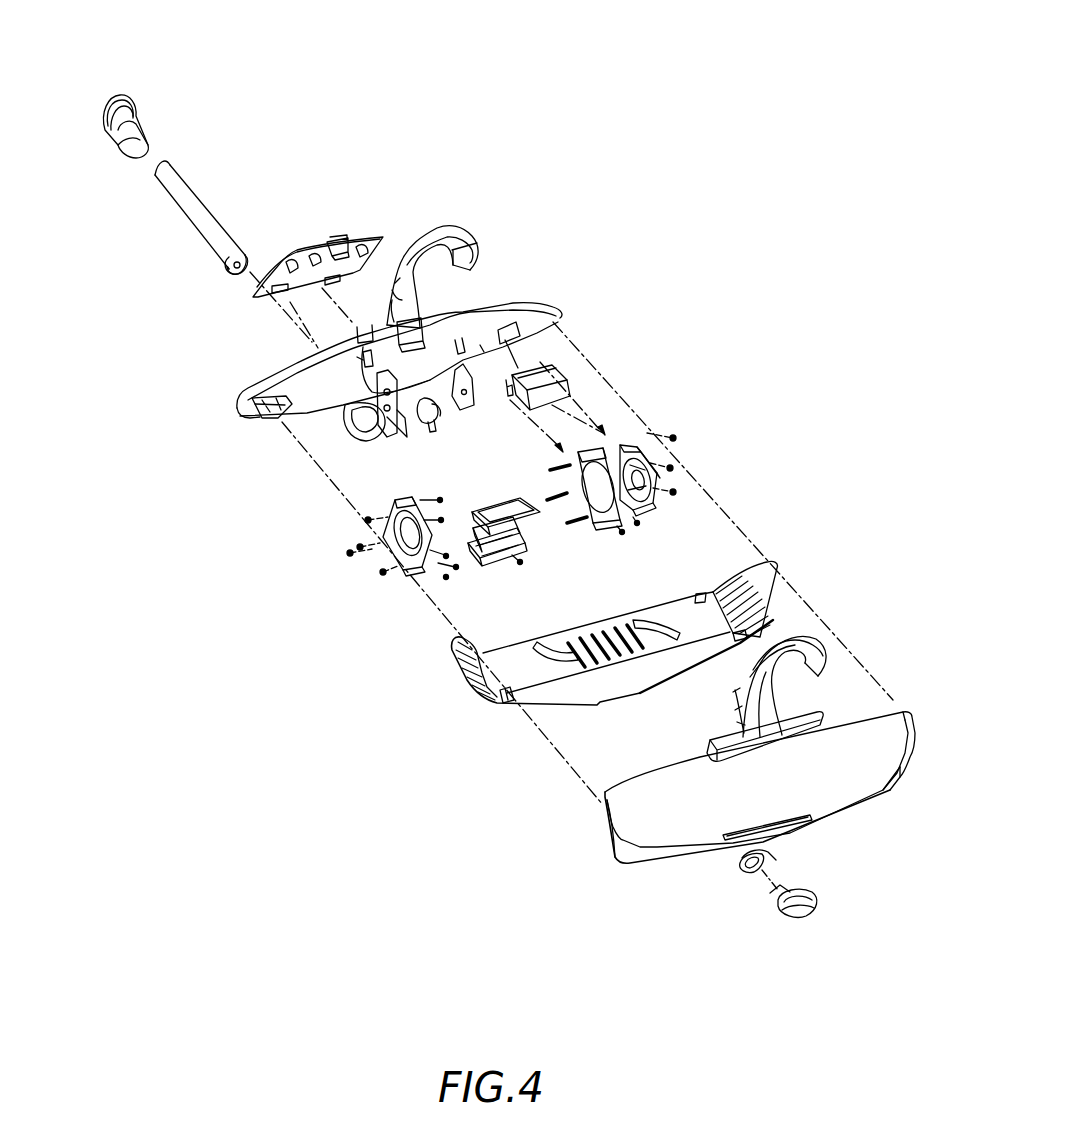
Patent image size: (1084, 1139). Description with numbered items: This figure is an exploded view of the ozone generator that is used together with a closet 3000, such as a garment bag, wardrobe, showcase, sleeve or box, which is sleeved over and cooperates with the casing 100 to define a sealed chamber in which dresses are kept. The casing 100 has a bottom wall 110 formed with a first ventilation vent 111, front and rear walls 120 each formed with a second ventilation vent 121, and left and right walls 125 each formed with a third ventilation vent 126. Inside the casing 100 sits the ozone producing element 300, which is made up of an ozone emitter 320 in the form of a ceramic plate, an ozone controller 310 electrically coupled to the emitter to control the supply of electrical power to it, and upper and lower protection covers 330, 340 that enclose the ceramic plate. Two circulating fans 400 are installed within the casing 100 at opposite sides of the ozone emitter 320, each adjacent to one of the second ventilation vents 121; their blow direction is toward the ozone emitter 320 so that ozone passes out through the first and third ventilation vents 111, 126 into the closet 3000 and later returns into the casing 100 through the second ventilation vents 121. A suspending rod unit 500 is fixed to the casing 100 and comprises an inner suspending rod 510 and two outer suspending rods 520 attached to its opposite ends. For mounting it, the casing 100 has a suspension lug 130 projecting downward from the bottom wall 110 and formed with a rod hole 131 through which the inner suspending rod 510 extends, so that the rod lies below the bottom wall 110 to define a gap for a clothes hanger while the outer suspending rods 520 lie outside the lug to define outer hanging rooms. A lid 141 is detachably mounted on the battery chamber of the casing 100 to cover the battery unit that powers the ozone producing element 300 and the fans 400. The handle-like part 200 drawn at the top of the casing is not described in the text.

The casing 100 is at (725, 800).
The bottom wall 110 is at (660, 606).
The first ventilation vent 111 is at (618, 683).
The front and rear walls 120 is at (569, 644).
The second ventilation vent 121 is at (470, 680).
The left and right walls 125 is at (650, 836).
The third ventilation vent 126 is at (740, 835).
The suspension lug 130 is at (732, 874).
The rod hole 131 is at (752, 882).
The lid 141 is at (346, 238).
The handle 200 is at (473, 232).
The ozone producing element 300 is at (511, 418).
The ozone controller 310 is at (510, 432).
The ozone emitter 320 is at (532, 535).
The upper protection cover 330 is at (517, 497).
The lower protection cover 340 is at (488, 570).
The circulating fan 400 is at (427, 574).
The suspending rod unit 500 is at (223, 206).
The inner suspending rod 510 is at (194, 236).
The outer suspending rod 520 is at (109, 92).
The closet 3000 is at (796, 154).